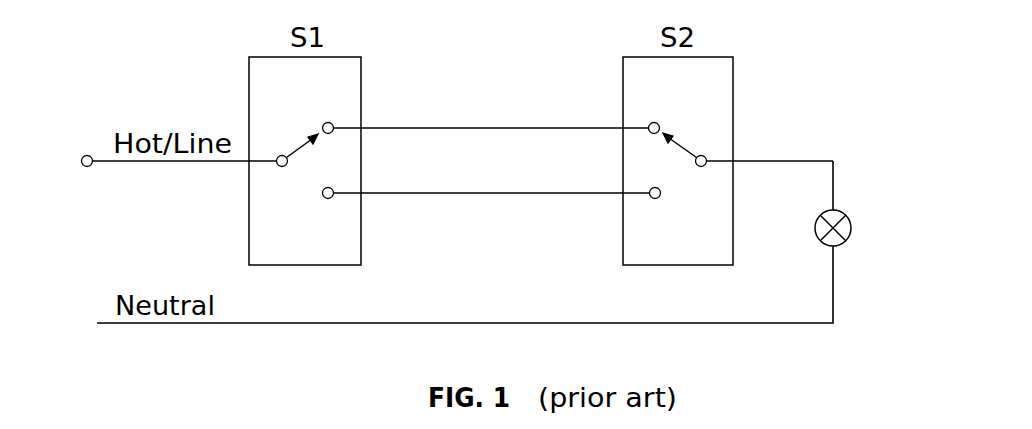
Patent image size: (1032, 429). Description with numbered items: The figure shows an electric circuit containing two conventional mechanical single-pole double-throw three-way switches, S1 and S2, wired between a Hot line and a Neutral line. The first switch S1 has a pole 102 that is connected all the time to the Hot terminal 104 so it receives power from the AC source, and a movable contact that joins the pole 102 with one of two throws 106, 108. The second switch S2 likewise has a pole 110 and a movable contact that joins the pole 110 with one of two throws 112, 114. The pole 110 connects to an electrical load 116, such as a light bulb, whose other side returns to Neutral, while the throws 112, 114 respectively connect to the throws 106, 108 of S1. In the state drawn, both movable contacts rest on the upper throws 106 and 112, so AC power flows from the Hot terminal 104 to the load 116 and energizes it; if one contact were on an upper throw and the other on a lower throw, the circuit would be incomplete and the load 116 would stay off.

The pole 102 is at (281, 167).
The Hot terminal 104 is at (86, 155).
The throw 106 is at (329, 122).
The throw 108 is at (330, 187).
The pole 110 is at (702, 167).
The throw 112 is at (653, 122).
The throw 114 is at (654, 187).
The electrical load 116 is at (851, 228).